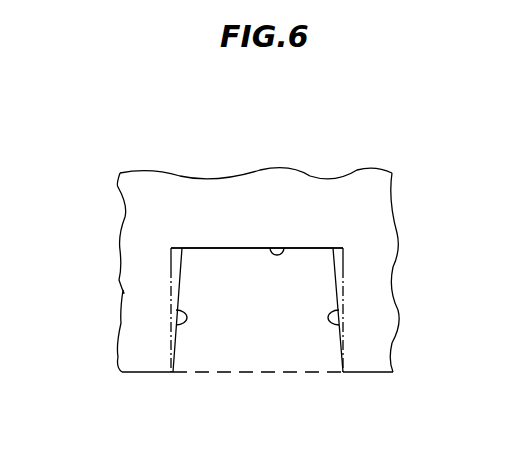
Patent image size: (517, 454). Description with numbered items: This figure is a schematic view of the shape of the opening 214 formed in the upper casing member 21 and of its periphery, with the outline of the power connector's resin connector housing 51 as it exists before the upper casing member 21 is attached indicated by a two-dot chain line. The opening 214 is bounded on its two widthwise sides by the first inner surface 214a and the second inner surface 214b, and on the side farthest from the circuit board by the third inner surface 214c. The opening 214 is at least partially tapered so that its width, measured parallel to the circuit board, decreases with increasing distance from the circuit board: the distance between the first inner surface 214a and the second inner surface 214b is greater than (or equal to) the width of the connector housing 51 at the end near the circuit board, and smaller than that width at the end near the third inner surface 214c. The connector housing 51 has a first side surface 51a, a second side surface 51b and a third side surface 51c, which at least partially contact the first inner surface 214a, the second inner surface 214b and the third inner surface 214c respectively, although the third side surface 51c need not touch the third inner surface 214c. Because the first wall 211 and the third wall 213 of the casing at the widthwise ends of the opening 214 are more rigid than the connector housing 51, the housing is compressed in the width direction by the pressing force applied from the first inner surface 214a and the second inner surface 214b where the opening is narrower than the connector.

The upper casing member 21 is at (250, 192).
The first wall 211 is at (145, 367).
The third wall 213 is at (373, 367).
The opening 214 is at (273, 323).
The first inner surface 214a is at (178, 313).
The second inner surface 214b is at (337, 310).
The third inner surface 214c is at (285, 248).
The connector housing 51 is at (227, 375).
The first side surface 51a is at (168, 265).
The second side surface 51b is at (345, 268).
The third side surface 51c is at (213, 247).